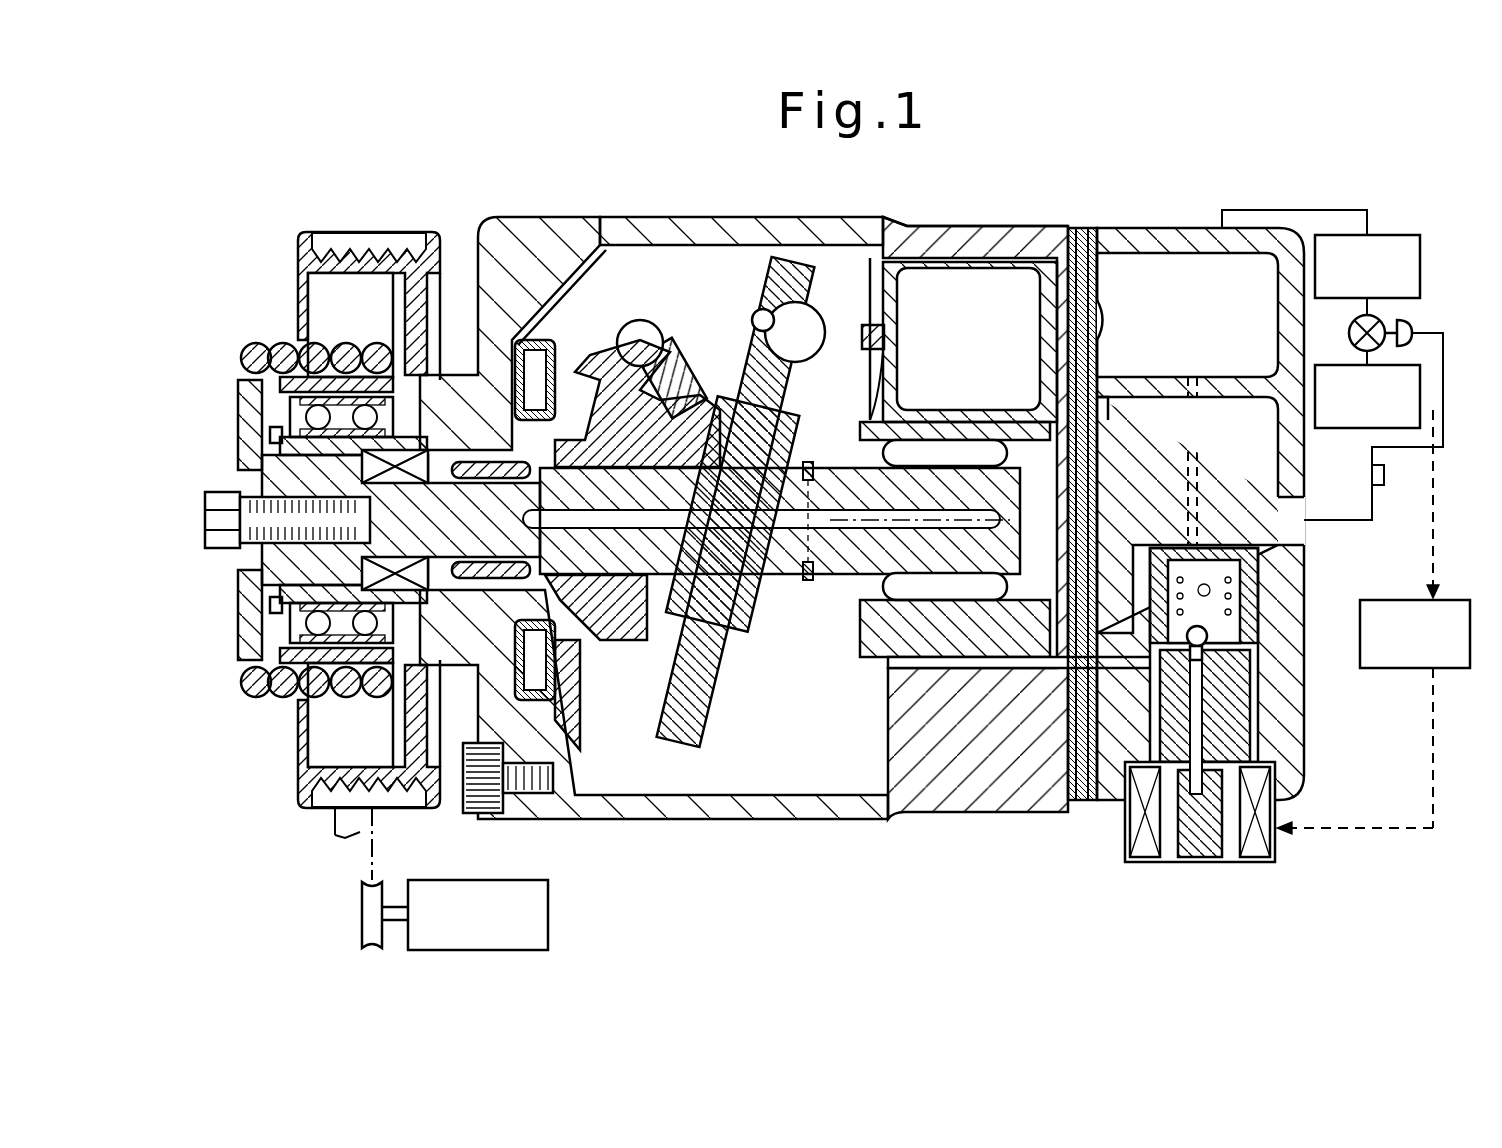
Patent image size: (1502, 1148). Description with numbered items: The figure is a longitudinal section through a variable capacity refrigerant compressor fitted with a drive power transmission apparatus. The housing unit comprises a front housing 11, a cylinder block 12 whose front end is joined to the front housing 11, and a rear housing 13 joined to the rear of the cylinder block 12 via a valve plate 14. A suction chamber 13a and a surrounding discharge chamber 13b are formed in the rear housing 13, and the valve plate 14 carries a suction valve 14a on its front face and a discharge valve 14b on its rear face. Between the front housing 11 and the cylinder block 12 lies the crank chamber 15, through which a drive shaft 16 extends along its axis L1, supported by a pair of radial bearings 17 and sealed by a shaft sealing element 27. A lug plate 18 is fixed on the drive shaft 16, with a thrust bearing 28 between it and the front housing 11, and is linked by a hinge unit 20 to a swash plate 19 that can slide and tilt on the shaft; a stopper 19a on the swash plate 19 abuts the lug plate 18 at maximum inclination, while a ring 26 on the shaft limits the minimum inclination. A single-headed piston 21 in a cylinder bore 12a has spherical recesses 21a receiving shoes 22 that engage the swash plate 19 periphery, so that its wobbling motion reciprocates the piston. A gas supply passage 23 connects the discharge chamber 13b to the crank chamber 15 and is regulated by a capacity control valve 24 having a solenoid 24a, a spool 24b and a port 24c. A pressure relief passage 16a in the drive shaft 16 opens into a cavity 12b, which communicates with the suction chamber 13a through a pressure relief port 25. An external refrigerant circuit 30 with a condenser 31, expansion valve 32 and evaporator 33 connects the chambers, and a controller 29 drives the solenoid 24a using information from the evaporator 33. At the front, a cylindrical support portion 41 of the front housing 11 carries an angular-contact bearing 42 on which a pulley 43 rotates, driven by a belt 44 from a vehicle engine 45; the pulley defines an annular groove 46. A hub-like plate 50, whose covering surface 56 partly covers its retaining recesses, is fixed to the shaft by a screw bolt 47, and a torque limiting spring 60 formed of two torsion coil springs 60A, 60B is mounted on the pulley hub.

The front housing 11 is at (770, 820).
The cylinder block 12 is at (975, 798).
The cylinder bore 12a is at (1066, 258).
The cavity 12b is at (1098, 556).
The rear housing 13 is at (1312, 715).
The suction chamber 13a is at (1163, 476).
The discharge chamber 13b is at (1238, 341).
The valve plate 14 is at (1085, 802).
The suction valve 14a is at (1098, 397).
The discharge valve 14b is at (1098, 310).
The crank chamber 15 is at (818, 748).
The drive shaft 16 is at (768, 560).
The pressure relief passage 16a is at (812, 580).
The radial bearing 17 is at (470, 675).
The lug plate 18 is at (552, 360).
The swash plate 19 is at (683, 748).
The stopper 19a is at (660, 612).
The hinge unit 20 is at (640, 318).
The single-headed piston 21 is at (862, 400).
The spherical recess 21a is at (752, 318).
The shoe 22 is at (800, 362).
The gas supply passage 23 is at (888, 665).
The capacity control valve 24 is at (1176, 874).
The solenoid 24a is at (1252, 860).
The spool 24b is at (1208, 640).
The port 24c is at (1210, 655).
The pressure relief port 25 is at (1100, 528).
The ring 26 is at (806, 582).
The shaft sealing element 27 is at (400, 483).
The thrust bearing 28 is at (470, 372).
The controller 29 is at (1412, 670).
The external refrigerant circuit 30 is at (1300, 192).
The condenser 31 is at (1385, 234).
The expansion valve 32 is at (1350, 338).
The evaporator 33 is at (1343, 430).
The cylindrical support portion 41 is at (270, 436).
The angular-contact bearing 42 is at (300, 415).
The pulley 43 is at (300, 232).
The belt 44 is at (350, 832).
The vehicle engine 45 is at (470, 880).
The annular groove 46 is at (360, 326).
The screw bolt 47 is at (220, 550).
The hub-like plate 50 is at (240, 462).
The covering surface 56 is at (240, 648).
The torque limiting spring 60 is at (300, 286).
The torsion coil spring 60A is at (280, 344).
The torsion coil spring 60B is at (246, 348).
The axis L1 is at (786, 502).